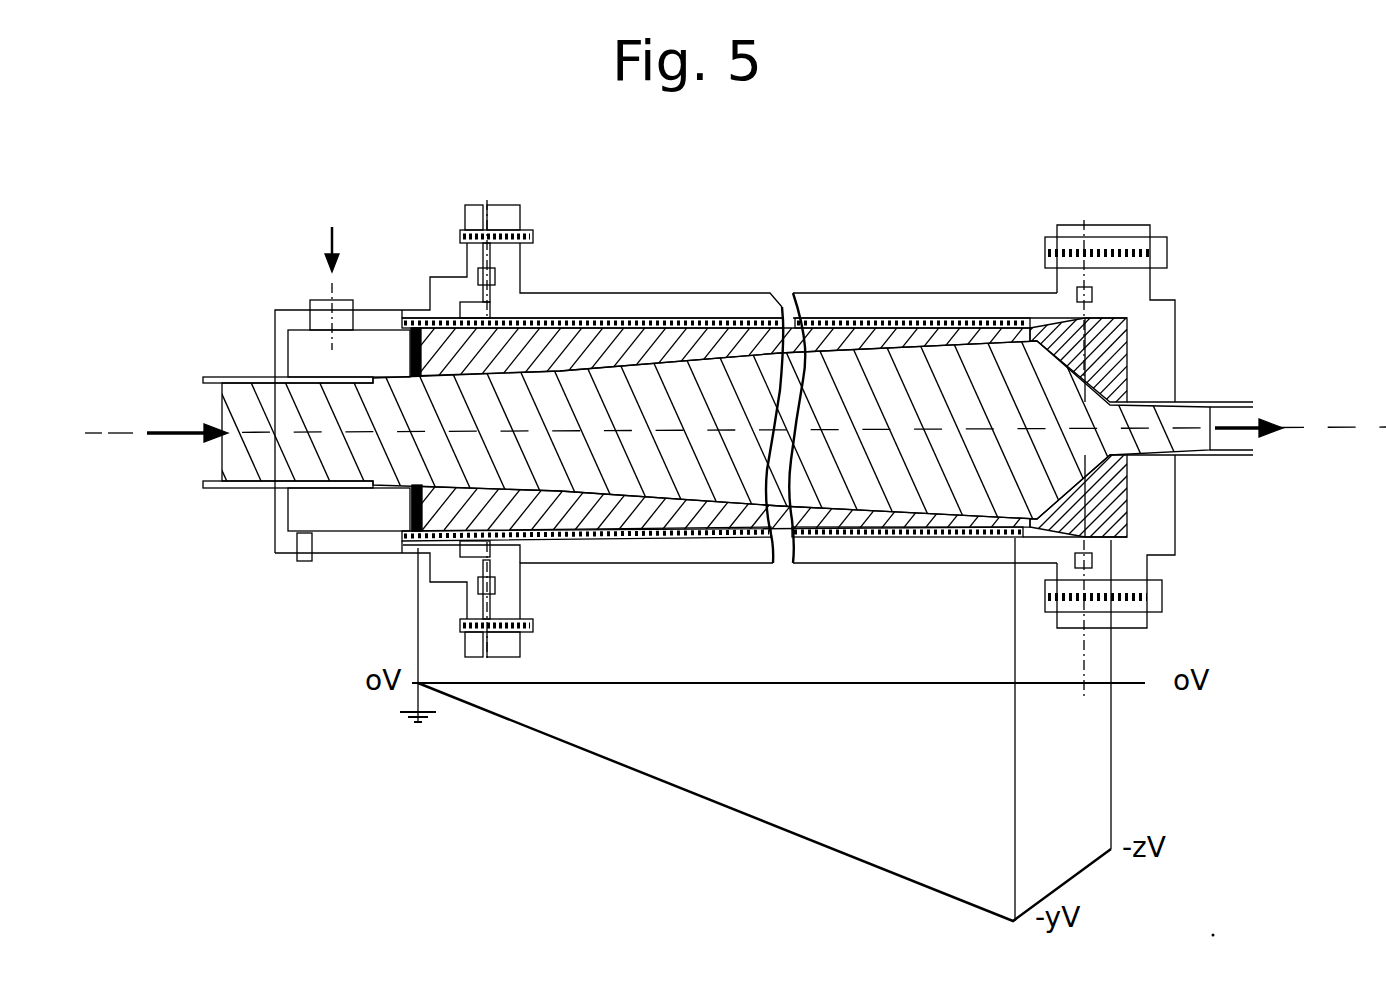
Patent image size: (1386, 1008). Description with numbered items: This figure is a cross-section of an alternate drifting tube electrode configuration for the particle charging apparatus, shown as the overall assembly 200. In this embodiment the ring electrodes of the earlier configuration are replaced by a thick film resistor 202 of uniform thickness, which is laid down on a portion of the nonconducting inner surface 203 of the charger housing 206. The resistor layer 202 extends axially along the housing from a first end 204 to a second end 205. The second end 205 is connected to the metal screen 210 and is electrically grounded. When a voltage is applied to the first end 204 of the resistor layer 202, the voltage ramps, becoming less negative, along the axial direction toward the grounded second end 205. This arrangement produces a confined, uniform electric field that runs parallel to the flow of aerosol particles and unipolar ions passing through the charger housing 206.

The nozzle assembly 200 is at (948, 198).
The thick film resistor 202 is at (563, 320).
The nonconducting inner surface 203 is at (653, 333).
The first end 204 is at (1032, 317).
The second end 205 is at (402, 309).
The charger housing 206 is at (837, 276).
The metal screen 210 is at (413, 513).